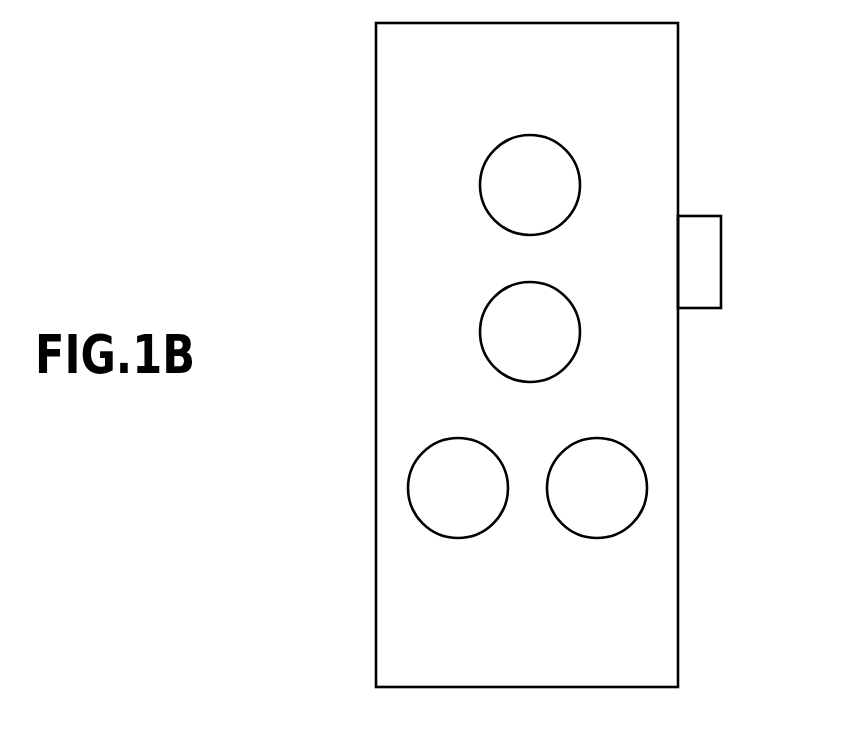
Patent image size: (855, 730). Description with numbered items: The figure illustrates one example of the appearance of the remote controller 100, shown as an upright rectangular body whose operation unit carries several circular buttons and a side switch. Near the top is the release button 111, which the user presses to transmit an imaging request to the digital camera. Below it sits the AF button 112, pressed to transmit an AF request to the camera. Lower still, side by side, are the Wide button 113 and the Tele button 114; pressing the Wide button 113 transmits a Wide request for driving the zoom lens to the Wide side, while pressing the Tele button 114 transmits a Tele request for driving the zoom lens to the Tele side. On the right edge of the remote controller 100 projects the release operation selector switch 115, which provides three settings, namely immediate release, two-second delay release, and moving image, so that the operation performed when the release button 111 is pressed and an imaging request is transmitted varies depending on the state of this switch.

The remote controller 100 is at (678, 82).
The release button 111 is at (533, 134).
The AF button 112 is at (564, 292).
The Wide button 113 is at (457, 438).
The Tele button 114 is at (598, 438).
The release operation selector switch 115 is at (722, 258).